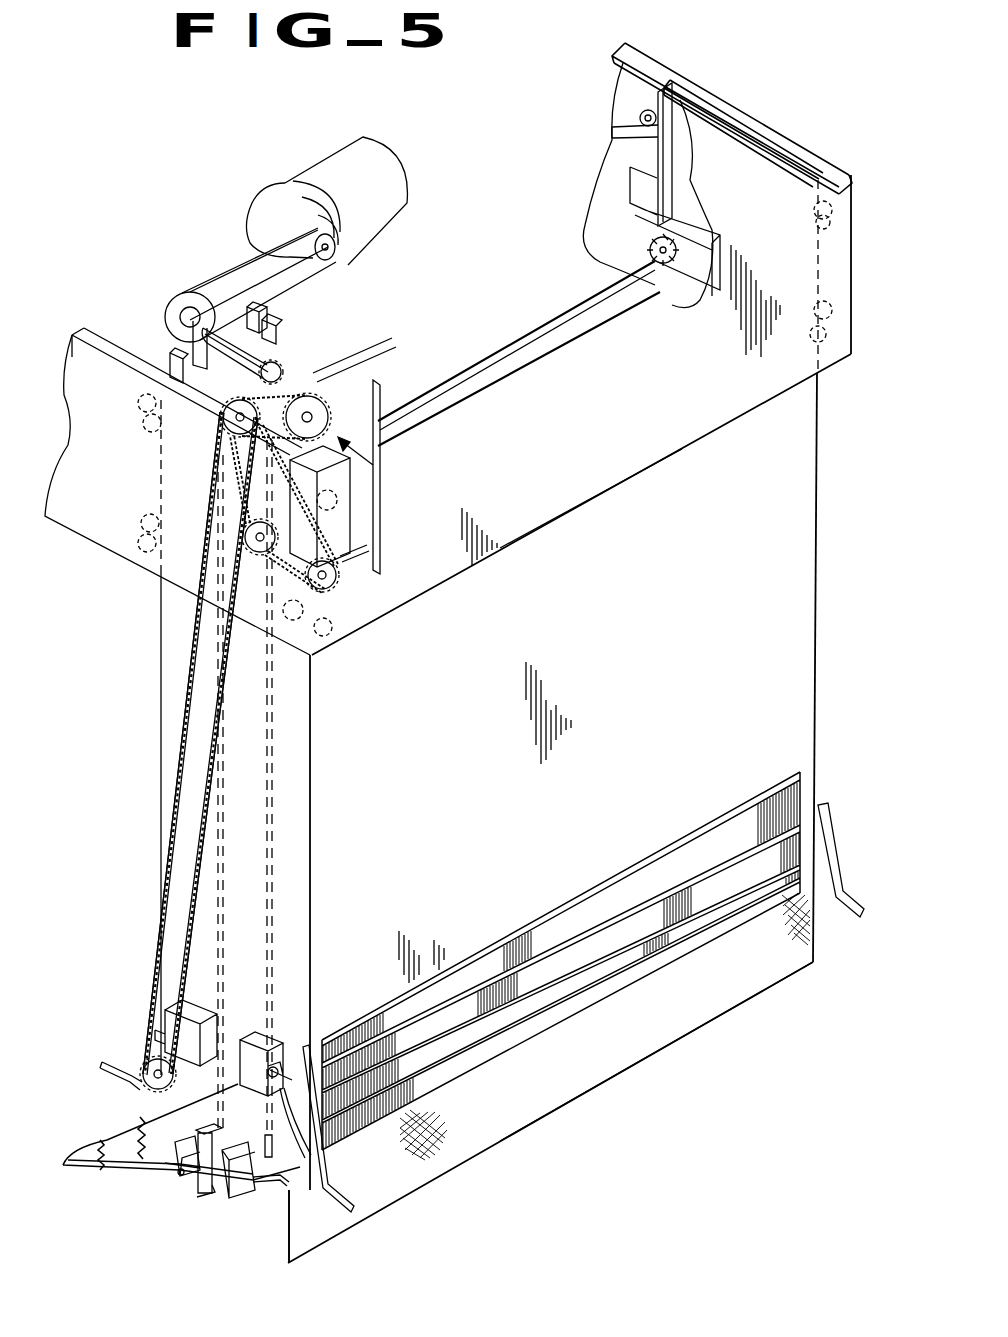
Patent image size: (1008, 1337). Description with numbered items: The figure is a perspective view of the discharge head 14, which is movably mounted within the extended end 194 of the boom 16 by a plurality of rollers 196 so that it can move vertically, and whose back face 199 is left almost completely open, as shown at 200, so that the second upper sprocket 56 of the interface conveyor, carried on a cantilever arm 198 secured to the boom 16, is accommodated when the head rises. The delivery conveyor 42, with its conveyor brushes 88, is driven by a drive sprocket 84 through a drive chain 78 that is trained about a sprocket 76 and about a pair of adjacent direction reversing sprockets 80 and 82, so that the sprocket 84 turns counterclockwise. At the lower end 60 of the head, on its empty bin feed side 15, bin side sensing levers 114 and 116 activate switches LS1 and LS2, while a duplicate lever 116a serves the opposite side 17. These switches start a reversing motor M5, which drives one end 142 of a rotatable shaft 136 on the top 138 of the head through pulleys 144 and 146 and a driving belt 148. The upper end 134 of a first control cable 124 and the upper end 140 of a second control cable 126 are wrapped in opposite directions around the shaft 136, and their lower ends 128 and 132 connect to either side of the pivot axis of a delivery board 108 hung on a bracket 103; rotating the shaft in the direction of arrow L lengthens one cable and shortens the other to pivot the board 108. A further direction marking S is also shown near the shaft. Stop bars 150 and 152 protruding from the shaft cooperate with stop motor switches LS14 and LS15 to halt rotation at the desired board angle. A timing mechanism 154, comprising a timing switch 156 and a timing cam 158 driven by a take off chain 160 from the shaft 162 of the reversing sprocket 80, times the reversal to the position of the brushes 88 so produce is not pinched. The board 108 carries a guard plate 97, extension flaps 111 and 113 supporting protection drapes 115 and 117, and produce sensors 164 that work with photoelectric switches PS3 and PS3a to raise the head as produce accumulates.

The discharge head 14 is at (822, 591).
The empty bin feed side 15 is at (160, 690).
The boom 16 is at (620, 56).
The opposite side 17 is at (817, 474).
The delivery conveyor 42 is at (600, 958).
The second upper sprocket 56 is at (665, 270).
The lower end 60 is at (305, 1160).
The sprocket 76 is at (150, 1062).
The drive chain 78 is at (176, 744).
The direction reversing sprocket 80 is at (222, 445).
The direction reversing sprocket 82 is at (338, 581).
The drive sprocket 84 is at (254, 523).
The conveyor brushes 88 is at (570, 948).
The guard plate 97 is at (177, 1165).
The bracket 103 is at (140, 1122).
The delivery board 108 is at (252, 1197).
The extension flap 111 is at (178, 1173).
The extension flap 113 is at (292, 1183).
The bin side sensing lever 114 is at (100, 1066).
The protection drape 115 is at (107, 1140).
The bin side sensing lever 116 is at (355, 1210).
The bin side sensing lever 116a is at (838, 838).
The protection drape 117 is at (612, 1072).
The first control cable 124 is at (218, 640).
The second control cable 126 is at (270, 676).
The lower end 128 is at (214, 1126).
The lower end 132 is at (270, 1143).
The upper end 134 is at (280, 330).
The rotatable shaft 136 is at (280, 346).
The top 138 is at (515, 274).
The upper end 140 is at (285, 366).
The end 142 is at (180, 310).
The pulley 144 is at (180, 296).
The pulley 146 is at (337, 243).
The driving belt 148 is at (325, 272).
The stop bar 150 is at (192, 338).
The stop bar 152 is at (222, 305).
The timing mechanism 154 is at (374, 475).
The timing switch 156 is at (335, 405).
The timing cam 158 is at (330, 384).
The take off chain 160 is at (283, 508).
The shaft 162 is at (226, 428).
The produce sensors 164 is at (197, 1197).
The extended end 194 is at (581, 502).
The rollers 196 is at (640, 113).
The cantilever arm 198 is at (690, 202).
The back face 199 is at (612, 127).
The open area 200 is at (612, 138).
The arrow L is at (200, 276).
The shaft S is at (247, 353).
The reversing motor M5 is at (326, 201).
The switch LS1 is at (165, 992).
The switch LS2 is at (260, 1036).
The stop motor switch LS14 is at (168, 368).
The stop motor switch LS15 is at (270, 313).
The photoelectric switch PS3 is at (232, 1200).
The photoelectric switch PS3a is at (185, 1178).